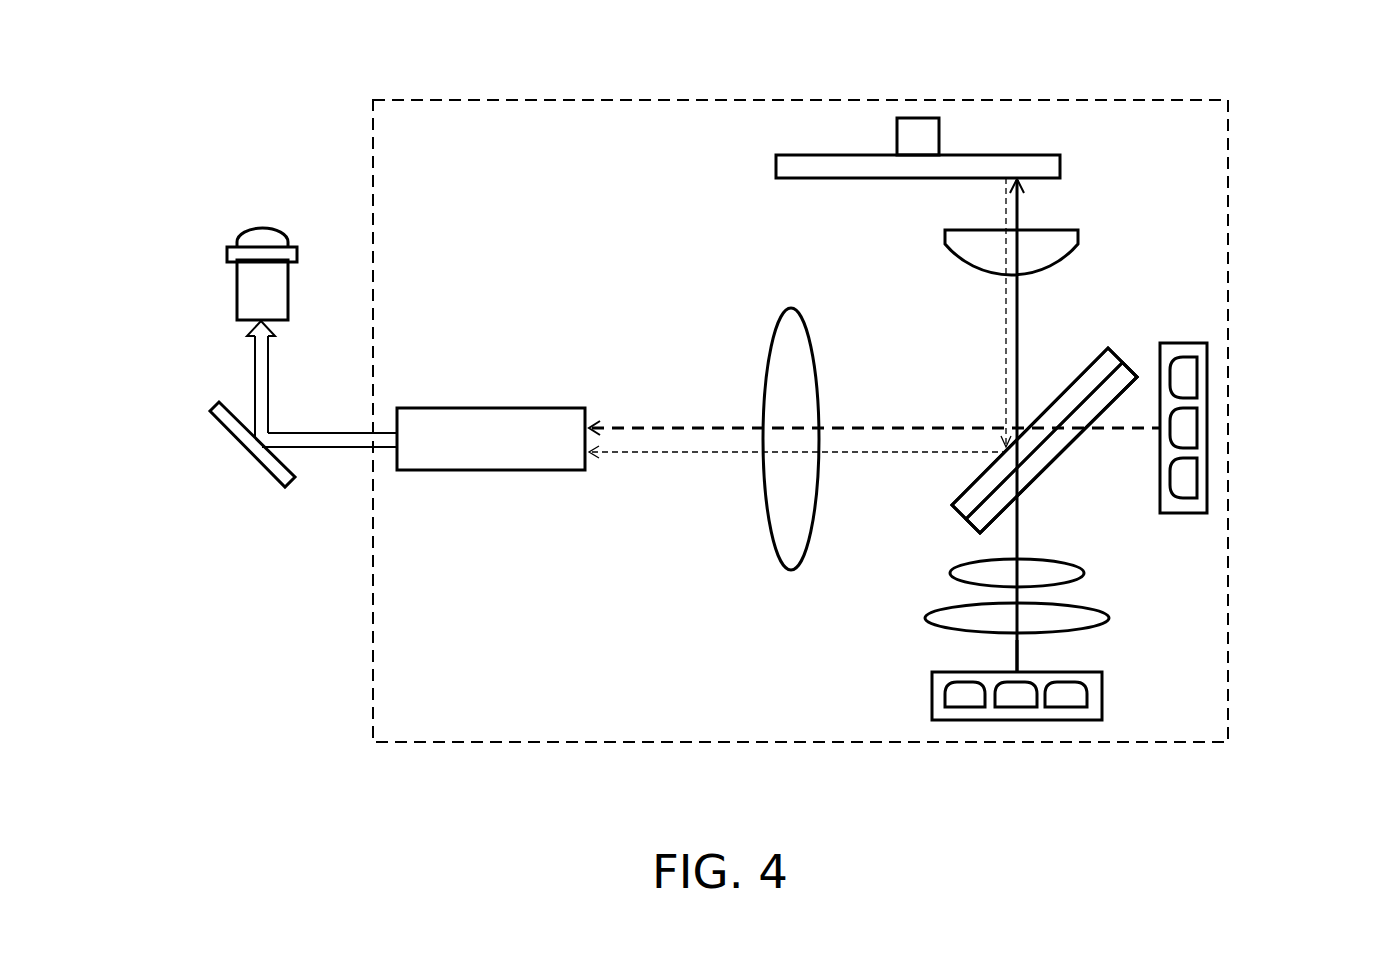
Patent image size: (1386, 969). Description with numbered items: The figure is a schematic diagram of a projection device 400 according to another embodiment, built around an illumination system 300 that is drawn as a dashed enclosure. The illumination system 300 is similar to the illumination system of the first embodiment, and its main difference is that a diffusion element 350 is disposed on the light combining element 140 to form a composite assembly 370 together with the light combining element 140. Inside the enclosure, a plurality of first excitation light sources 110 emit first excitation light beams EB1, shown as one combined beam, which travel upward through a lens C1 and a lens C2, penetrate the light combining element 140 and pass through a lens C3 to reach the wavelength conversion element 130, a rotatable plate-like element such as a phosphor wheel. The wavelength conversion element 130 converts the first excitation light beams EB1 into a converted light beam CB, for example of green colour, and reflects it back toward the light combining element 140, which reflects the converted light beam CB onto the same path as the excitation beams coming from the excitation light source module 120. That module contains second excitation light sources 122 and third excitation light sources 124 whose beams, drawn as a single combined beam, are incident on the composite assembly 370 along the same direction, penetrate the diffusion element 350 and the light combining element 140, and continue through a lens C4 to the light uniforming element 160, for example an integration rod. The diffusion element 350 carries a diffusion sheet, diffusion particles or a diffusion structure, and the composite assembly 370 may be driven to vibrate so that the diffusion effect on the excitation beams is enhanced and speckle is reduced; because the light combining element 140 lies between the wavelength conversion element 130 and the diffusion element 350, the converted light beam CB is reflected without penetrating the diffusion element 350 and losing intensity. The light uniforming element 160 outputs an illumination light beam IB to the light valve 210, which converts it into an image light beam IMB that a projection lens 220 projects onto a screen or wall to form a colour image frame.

The projection device 400 is at (1354, 796).
The illumination system 300 is at (1114, 100).
The wavelength conversion element 130 is at (790, 166).
The converted light beam CB is at (1005, 345).
The lens C3 is at (955, 240).
The light combining element 140 is at (1082, 367).
The diffusion element 350 is at (1128, 365).
The composite assembly 370 is at (957, 528).
The excitation light source module 120 is at (1261, 428).
The second excitation light sources 122 is at (1185, 427).
The third excitation light sources 124 is at (1185, 375).
The lens C4 is at (780, 535).
The lens C2 is at (960, 572).
The lens C1 is at (945, 617).
The first excitation light beams EB1 is at (1015, 657).
The first excitation light sources 110 is at (1070, 698).
The light uniforming element 160 is at (490, 455).
The illumination light beam IB is at (332, 438).
The image light beam IMB is at (258, 360).
The projection lens 220 is at (245, 290).
The light valve 210 is at (258, 450).